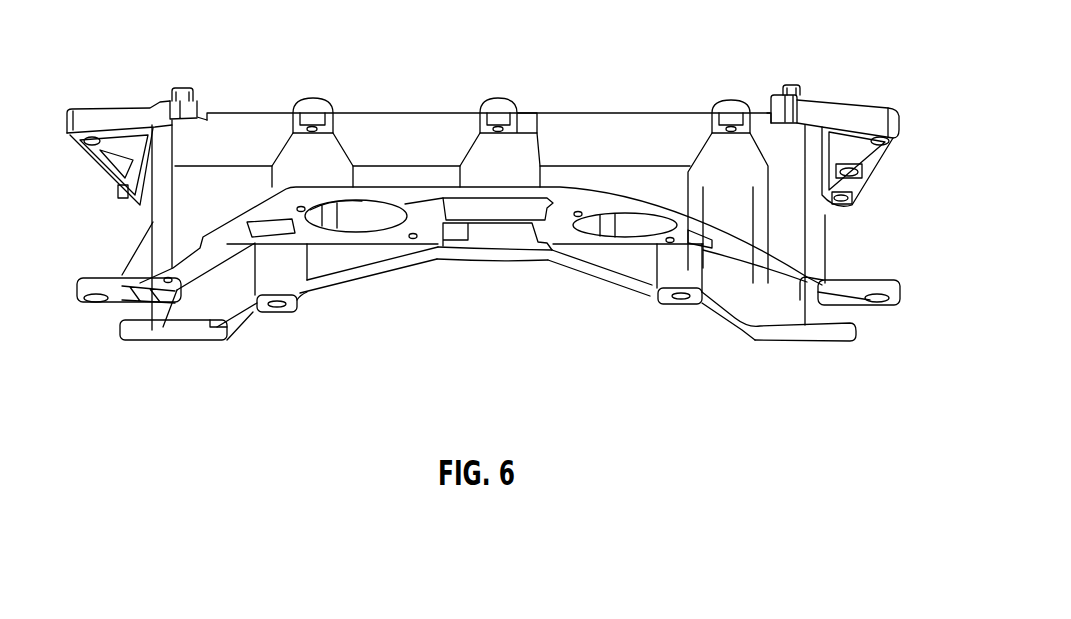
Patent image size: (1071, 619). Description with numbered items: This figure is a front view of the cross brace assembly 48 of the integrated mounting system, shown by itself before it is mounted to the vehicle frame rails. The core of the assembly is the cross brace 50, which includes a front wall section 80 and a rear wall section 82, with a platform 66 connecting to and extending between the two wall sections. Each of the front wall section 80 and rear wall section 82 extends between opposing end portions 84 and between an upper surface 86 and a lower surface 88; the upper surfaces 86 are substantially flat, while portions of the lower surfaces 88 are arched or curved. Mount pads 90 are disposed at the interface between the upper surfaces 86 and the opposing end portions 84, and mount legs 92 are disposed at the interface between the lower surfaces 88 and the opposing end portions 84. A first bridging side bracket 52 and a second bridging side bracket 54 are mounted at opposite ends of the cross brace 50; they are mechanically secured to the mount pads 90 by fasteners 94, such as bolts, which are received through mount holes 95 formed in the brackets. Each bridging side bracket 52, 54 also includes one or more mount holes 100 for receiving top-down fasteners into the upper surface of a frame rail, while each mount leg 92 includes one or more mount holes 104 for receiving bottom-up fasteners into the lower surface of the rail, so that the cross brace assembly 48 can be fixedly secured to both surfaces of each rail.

The cross brace assembly 48 is at (652, 60).
The cross brace 50 is at (680, 133).
The first bridging side bracket 52 is at (865, 113).
The second bridging side bracket 54 is at (121, 111).
The platform 66 is at (427, 237).
The front wall section 80 is at (635, 260).
The rear wall section 82 is at (620, 200).
The opposing end portions 84 is at (97, 262).
The upper surface 86 is at (405, 112).
The lower surface 88 is at (213, 240).
The mount pads 90 is at (180, 120).
The mount legs 92 is at (185, 343).
The fasteners 94 is at (181, 87).
The mount holes 95 is at (197, 100).
The mount holes 100 is at (87, 138).
The mount holes 104 is at (148, 345).